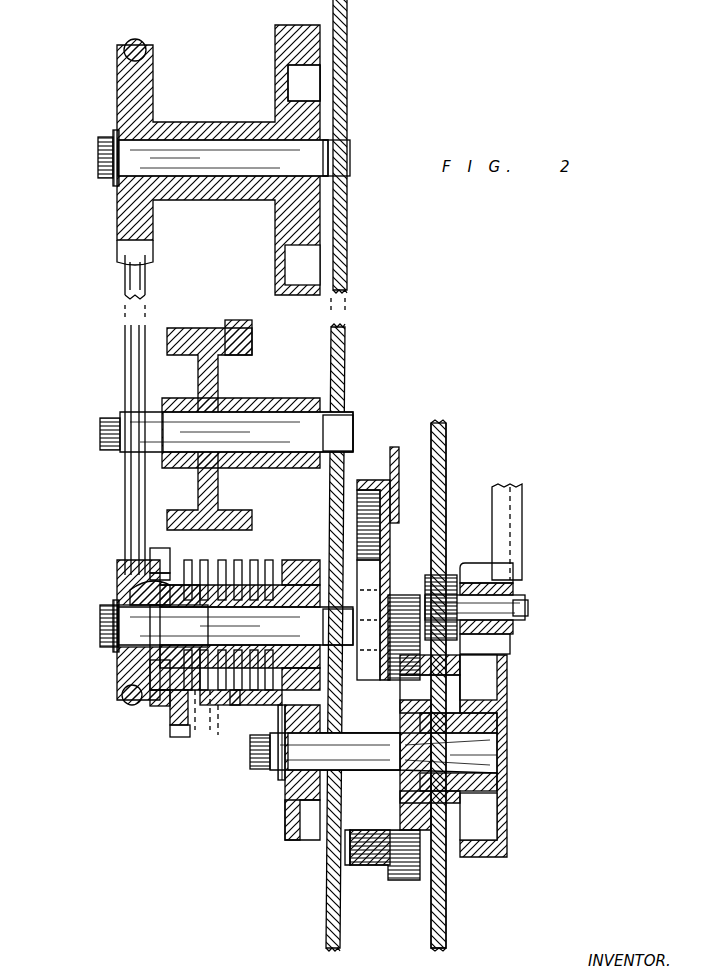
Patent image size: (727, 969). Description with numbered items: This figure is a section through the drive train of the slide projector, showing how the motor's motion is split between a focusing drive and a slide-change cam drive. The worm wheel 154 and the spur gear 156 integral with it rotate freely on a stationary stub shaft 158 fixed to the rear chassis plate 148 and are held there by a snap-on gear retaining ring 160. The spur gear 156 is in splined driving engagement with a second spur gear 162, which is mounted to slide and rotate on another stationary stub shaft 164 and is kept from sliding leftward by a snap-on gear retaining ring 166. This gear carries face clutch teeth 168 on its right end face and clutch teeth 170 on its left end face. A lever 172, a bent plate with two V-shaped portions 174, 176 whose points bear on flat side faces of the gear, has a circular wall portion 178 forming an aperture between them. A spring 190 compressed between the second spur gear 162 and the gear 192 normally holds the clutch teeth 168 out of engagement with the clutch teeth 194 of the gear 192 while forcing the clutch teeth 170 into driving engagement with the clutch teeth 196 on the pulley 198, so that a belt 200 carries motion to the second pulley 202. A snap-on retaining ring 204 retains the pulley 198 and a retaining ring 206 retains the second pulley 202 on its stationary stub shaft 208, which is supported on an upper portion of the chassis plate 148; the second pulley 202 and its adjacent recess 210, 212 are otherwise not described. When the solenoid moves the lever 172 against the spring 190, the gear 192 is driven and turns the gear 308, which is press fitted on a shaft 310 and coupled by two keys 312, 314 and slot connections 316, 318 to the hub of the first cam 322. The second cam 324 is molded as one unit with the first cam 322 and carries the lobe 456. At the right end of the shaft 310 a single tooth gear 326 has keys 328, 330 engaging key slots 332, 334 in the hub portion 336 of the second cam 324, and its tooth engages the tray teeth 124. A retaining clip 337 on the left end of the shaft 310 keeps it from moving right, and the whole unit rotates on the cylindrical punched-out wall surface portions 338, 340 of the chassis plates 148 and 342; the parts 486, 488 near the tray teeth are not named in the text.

The tray teeth 124 is at (512, 520).
The rear chassis plate 148 is at (340, 290).
The worm wheel 154 is at (240, 320).
The spur gear 156 is at (203, 328).
The stationary stub shaft 158 is at (99, 430).
The snap-on gear retaining ring 160 is at (160, 400).
The second spur gear 162 is at (200, 732).
The stationary stub shaft 164 is at (99, 620).
The snap-on gear retaining ring 166 is at (152, 660).
The face clutch teeth 168 is at (222, 705).
The clutch teeth 170 is at (160, 690).
The lever 172 is at (152, 550).
The V-shaped portion 174 is at (150, 575).
The V-shaped portion 176 is at (160, 706).
The circular wall portion 178 is at (128, 592).
The spring 190 is at (178, 725).
The gear 192 is at (298, 585).
The clutch teeth 194 is at (258, 692).
The clutch teeth 196 is at (122, 688).
The pulley 198 is at (116, 562).
The belt 200 is at (125, 275).
The second pulley 202 is at (123, 60).
The snap-on retaining ring 204 is at (112, 648).
The retaining ring 206 is at (114, 135).
The stationary stub shaft 208 is at (97, 155).
The pulley 210 is at (290, 213).
The recess 212 is at (300, 82).
The gear 308 is at (300, 835).
The shaft 310 is at (250, 760).
The key 312 is at (448, 700).
The key 314 is at (368, 850).
The slot connection 316 is at (430, 690).
The slot connection 318 is at (355, 870).
The first cam 322 is at (370, 480).
The second cam 324 is at (405, 595).
The single tooth gear 326 is at (507, 815).
The key 328 is at (470, 742).
The key 330 is at (480, 760).
The key slot 332 is at (490, 722).
The key slot 334 is at (462, 797).
The hub portion 336 is at (440, 672).
The retaining clip 337 is at (282, 780).
The cylindrical punched-out wall surface portion 338 is at (300, 818).
The cylindrical punched-out wall surface portion 340 is at (460, 783).
The chassis plate 342 is at (465, 685).
The lobe 456 is at (394, 447).
The bolt 486 is at (500, 575).
The block 488 is at (495, 640).